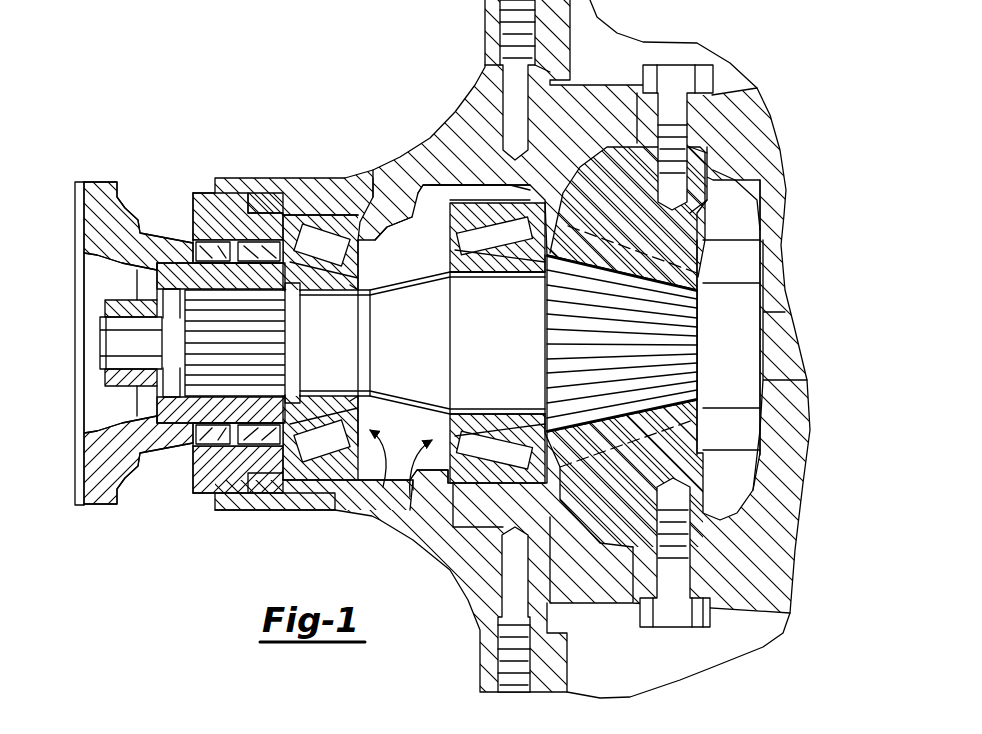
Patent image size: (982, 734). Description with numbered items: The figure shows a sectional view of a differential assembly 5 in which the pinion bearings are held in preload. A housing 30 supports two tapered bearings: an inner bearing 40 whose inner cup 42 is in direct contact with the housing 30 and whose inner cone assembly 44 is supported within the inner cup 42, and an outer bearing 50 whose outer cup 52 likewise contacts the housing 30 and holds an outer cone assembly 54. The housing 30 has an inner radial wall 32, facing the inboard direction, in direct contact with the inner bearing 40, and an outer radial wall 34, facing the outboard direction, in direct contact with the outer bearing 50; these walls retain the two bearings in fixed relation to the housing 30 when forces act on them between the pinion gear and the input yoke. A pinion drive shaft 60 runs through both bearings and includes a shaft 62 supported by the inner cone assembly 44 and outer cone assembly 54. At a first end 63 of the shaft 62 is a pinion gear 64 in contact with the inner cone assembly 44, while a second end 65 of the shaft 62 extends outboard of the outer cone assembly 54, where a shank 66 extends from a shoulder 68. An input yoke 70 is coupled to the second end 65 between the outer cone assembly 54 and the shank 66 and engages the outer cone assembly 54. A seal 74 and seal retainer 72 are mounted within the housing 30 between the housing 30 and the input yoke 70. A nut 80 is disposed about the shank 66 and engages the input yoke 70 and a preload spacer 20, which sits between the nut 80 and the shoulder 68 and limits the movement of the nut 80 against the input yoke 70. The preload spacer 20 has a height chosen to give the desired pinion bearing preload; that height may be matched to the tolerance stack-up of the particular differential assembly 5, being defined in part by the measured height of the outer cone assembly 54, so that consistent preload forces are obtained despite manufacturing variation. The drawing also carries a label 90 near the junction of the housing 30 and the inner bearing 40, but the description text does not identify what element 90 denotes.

The differential assembly 5 is at (378, 93).
The preload spacer 20 is at (155, 303).
The housing 30 is at (256, 178).
The inner radial wall 32 is at (440, 477).
The outer radial wall 34 is at (376, 178).
The inner bearing 40 is at (413, 487).
The inner cup 42 is at (453, 237).
The inner cone assembly 44 is at (437, 268).
The outer bearing 50 is at (373, 467).
The outer cup 52 is at (360, 480).
The outer cone assembly 54 is at (350, 422).
The pinion drive shaft 60 is at (405, 257).
The shaft 62 is at (423, 297).
The first end 63 is at (697, 353).
The pinion gear 64 is at (660, 410).
The second end 65 is at (100, 330).
The shank 66 is at (107, 380).
The shoulder 68 is at (100, 335).
The input yoke 70 is at (130, 230).
The seal retainer 72 is at (207, 512).
The seal 74 is at (195, 442).
The nut 80 is at (104, 313).
The shim 90 is at (530, 192).